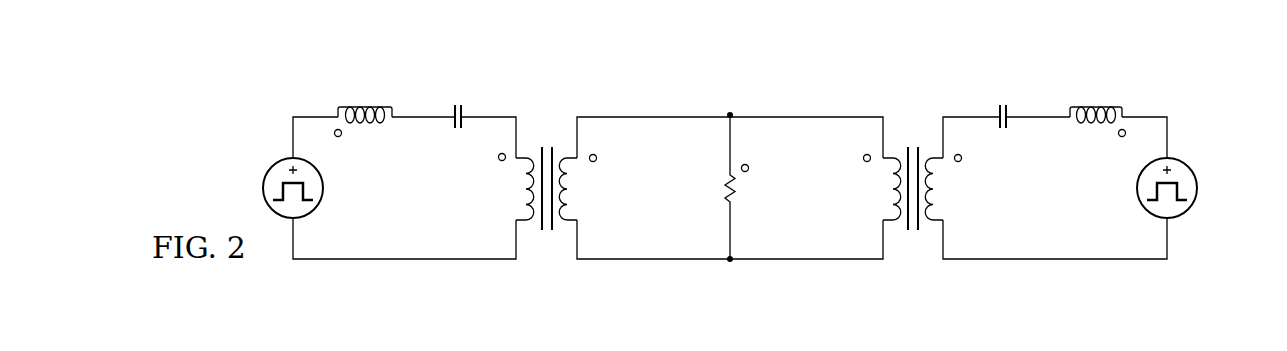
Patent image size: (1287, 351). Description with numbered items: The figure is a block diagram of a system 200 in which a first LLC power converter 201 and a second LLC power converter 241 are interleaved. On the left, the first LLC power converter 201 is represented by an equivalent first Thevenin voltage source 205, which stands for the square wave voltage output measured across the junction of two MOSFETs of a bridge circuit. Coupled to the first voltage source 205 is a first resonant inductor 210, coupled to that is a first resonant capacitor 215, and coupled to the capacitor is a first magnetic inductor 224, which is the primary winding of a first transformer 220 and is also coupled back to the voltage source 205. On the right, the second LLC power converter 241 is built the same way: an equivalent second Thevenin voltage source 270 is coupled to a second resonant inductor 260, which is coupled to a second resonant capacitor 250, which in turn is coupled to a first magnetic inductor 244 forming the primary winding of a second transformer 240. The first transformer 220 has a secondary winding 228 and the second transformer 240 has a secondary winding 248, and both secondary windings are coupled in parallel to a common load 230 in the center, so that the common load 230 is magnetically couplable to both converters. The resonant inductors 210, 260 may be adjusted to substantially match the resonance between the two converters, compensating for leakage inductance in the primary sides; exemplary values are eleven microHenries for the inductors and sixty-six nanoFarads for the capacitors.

The system 200 is at (250, 106).
The first LLC power converter 201 is at (415, 281).
The first Thevenin voltage source 205 is at (263, 188).
The first resonant inductor 210 is at (364, 104).
The first resonant capacitor 215 is at (455, 104).
The first transformer 220 is at (543, 131).
The first magnetic inductor 224 is at (530, 229).
The secondary winding 228 is at (560, 224).
The common load R1 230 is at (727, 186).
The second transformer 240 is at (917, 131).
The second LLC power converter 241 is at (1046, 282).
The first magnetic inductor 244 is at (932, 231).
The secondary winding 248 is at (898, 224).
The second resonant capacitor 250 is at (1003, 104).
The second resonant inductor 260 is at (1096, 104).
The second Thevenin voltage source 270 is at (1198, 186).